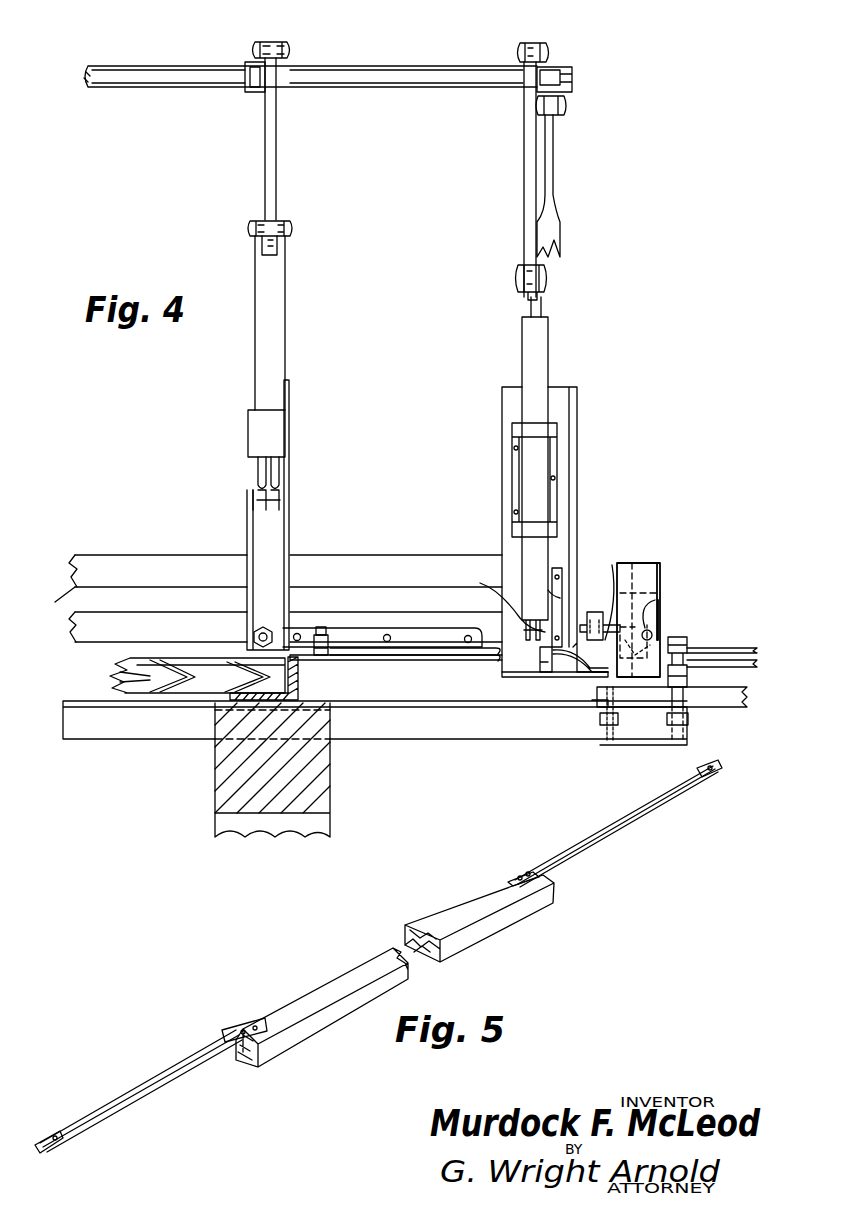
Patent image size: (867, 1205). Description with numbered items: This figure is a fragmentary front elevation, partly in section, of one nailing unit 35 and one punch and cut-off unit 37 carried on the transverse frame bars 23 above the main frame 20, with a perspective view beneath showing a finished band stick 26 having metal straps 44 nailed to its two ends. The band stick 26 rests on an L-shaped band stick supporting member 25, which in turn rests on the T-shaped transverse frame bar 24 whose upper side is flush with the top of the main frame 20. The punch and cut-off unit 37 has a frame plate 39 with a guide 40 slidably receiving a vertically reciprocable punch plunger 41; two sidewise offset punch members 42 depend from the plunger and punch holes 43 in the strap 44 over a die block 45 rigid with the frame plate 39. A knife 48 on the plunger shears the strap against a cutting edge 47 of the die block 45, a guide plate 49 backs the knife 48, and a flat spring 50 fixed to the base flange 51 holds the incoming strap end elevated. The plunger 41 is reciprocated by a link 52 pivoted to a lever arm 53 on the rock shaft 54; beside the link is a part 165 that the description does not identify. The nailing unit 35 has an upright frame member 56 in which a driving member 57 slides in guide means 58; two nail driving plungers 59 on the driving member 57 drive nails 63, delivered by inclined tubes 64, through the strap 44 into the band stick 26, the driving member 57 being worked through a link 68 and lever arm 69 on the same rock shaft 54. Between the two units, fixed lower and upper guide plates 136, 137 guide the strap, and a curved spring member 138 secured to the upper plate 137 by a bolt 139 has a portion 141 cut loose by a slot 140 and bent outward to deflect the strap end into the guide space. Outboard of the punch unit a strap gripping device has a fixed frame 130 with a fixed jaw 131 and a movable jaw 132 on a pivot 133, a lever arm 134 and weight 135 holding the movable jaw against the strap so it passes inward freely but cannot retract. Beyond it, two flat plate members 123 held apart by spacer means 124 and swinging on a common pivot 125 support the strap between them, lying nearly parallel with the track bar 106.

In FIG. 4, the main frame 20 is at (215, 798).
In FIG. 4, the transverse frame bars 23 is at (65, 603).
In FIG. 4, the transverse frame bar 24 is at (478, 742).
In FIG. 4, the band stick supporting members 25 is at (298, 688).
In FIG. 4, the band stick 26 is at (168, 695).
In FIG. 5, the band stick 26 is at (398, 914).
In FIG. 4, the nailing unit 35 is at (345, 392).
In FIG. 4, the punch and cut-off unit 37 is at (591, 468).
In FIG. 4, the frame plate 39 is at (577, 410).
In FIG. 4, the guide 40 is at (560, 432).
In FIG. 4, the punch plunger 41 is at (546, 362).
In FIG. 4, the punch members 42 is at (496, 598).
In FIG. 5, the holes 43 is at (712, 778).
In FIG. 5, the metal strap 44 is at (645, 808).
In FIG. 4, the die block 45 is at (534, 678).
In FIG. 4, the cutting edge 47 is at (544, 665).
In FIG. 4, the knife 48 is at (566, 622).
In FIG. 4, the guide plate 49 is at (560, 574).
In FIG. 4, the flat spring 50 is at (585, 675).
In FIG. 4, the base flange 51 is at (590, 683).
In FIG. 4, the link 52 is at (524, 215).
In FIG. 4, the lever arm 53 is at (565, 67).
In FIG. 4, the rock shaft 54 is at (420, 67).
In FIG. 4, the frame member 56 is at (290, 524).
In FIG. 4, the driving member 57 is at (278, 344).
In FIG. 4, the guide means 58 is at (248, 439).
In FIG. 4, the nail driving plungers 59 is at (256, 468).
In FIG. 5, the nails 63 is at (530, 874).
In FIG. 4, the inclined tubes 64 is at (253, 505).
In FIG. 4, the link 68 is at (277, 156).
In FIG. 4, the lever arm 69 is at (258, 93).
In FIG. 4, the track bar 106 is at (722, 707).
In FIG. 4, the flat plate members 123 is at (718, 662).
In FIG. 4, the spacer means 124 is at (682, 644).
In FIG. 4, the pivot 125 is at (665, 637).
In FIG. 4, the fixed frame 130 is at (660, 600).
In FIG. 4, the fixed jaw 131 is at (645, 705).
In FIG. 4, the movable jaw 132 is at (650, 570).
In FIG. 4, the pivot 133 is at (660, 592).
In FIG. 4, the lever arm 134 is at (635, 565).
In FIG. 4, the weight 135 is at (612, 565).
In FIG. 4, the lower guide plate 136 is at (430, 665).
In FIG. 4, the upper guide plate 137 is at (425, 628).
In FIG. 4, the curved spring member 138 is at (313, 632).
In FIG. 4, the bolt 139 is at (324, 628).
In FIG. 4, the slot 140 is at (330, 645).
In FIG. 4, the outwardly bent portion 141 is at (356, 682).
In FIG. 4, the fork member 165 is at (556, 175).